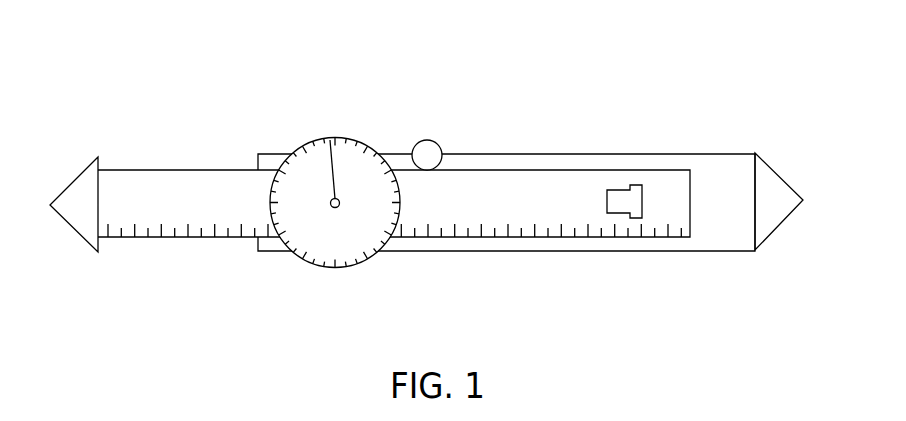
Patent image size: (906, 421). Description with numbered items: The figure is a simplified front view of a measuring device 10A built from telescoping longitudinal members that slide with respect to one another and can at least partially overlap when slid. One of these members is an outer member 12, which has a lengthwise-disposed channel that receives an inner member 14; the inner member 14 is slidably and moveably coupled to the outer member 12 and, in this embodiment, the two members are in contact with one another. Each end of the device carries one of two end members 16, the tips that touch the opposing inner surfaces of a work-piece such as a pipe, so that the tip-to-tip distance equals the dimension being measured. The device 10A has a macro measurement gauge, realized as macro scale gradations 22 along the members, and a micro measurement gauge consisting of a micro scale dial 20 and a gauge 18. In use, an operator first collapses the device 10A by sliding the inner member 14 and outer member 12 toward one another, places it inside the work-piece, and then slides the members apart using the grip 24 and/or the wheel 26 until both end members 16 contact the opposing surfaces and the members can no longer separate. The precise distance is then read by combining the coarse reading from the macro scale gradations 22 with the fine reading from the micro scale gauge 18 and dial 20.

The measuring device 10A is at (570, 56).
The outer member 12 is at (597, 252).
The inner member 14 is at (192, 170).
The end members 16 is at (78, 177).
The gauge 18 is at (330, 140).
The micro scale dial 20 is at (320, 267).
The macro scale gradations 22 is at (128, 248).
The grip 24 is at (617, 190).
The wheel 26 is at (424, 140).